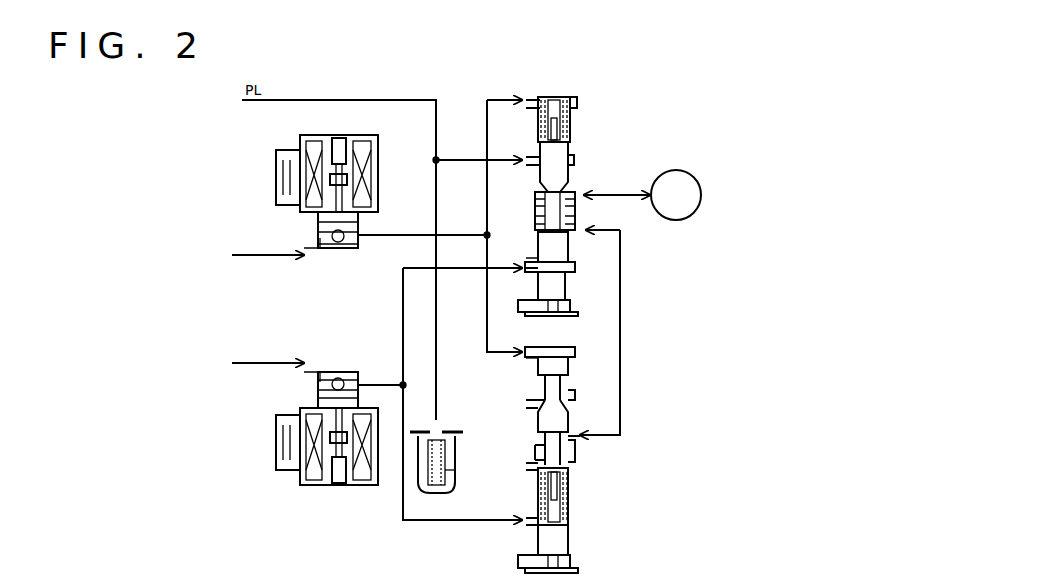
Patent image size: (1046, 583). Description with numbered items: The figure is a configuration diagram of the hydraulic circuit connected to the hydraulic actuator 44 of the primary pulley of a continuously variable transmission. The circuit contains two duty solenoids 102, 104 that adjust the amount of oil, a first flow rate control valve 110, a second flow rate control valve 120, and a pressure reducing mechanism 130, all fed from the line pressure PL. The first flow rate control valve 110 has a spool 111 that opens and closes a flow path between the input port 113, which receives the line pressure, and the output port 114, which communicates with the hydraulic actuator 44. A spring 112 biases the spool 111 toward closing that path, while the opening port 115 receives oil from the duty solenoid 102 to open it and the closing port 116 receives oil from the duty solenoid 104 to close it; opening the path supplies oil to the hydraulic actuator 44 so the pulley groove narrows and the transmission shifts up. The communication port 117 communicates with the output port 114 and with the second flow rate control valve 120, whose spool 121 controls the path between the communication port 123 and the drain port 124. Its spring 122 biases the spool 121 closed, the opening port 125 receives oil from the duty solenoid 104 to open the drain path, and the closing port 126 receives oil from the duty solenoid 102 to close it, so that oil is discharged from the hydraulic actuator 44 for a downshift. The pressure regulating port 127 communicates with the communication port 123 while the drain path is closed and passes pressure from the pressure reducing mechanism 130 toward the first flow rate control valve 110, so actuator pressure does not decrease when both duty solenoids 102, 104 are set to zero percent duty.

The hydraulic actuator 44 is at (694, 176).
The duty solenoid 102 is at (318, 486).
The duty solenoid 104 is at (300, 140).
The first flow rate control valve 110 is at (550, 94).
The spool 111 is at (560, 152).
The spring 112 is at (571, 110).
The input port 113 is at (533, 155).
The output port 114 is at (583, 182).
The opening port 115 is at (533, 258).
The closing port 116 is at (530, 97).
The communication port 117 is at (580, 232).
The second flow rate control valve 120 is at (572, 535).
The spool 121 is at (560, 408).
The spring 122 is at (568, 488).
The communication port 123 is at (578, 442).
The drain port 124 is at (533, 350).
The opening port 125 is at (533, 395).
The closing port 126 is at (535, 516).
The pressure regulating port 127 is at (535, 462).
The pressure reducing mechanism 130 is at (533, 400).